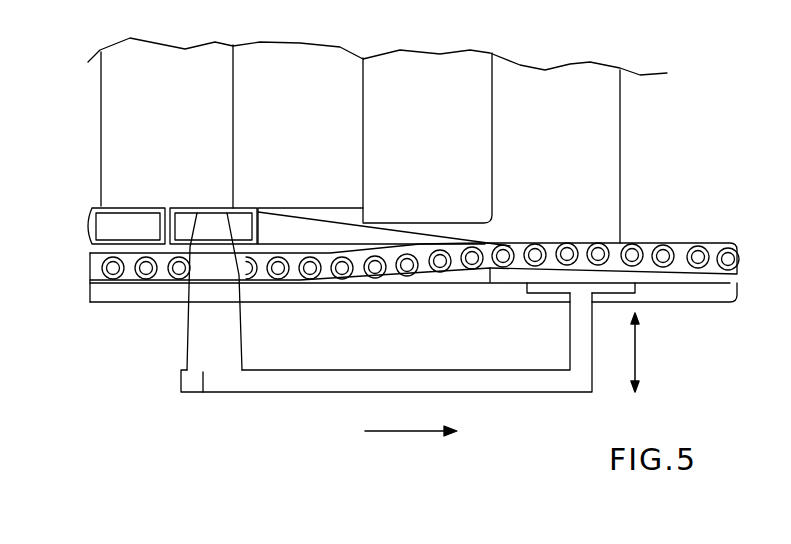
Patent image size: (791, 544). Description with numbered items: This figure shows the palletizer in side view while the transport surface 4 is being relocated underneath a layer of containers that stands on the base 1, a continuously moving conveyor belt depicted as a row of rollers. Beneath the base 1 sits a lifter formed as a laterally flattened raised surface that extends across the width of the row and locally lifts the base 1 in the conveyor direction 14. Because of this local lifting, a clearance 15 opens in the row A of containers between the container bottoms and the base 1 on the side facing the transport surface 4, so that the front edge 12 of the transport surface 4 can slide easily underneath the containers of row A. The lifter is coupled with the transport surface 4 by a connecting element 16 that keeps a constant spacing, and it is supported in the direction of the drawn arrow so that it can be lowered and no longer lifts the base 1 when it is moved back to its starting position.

The base 1 is at (688, 243).
The transport surface 4 is at (102, 222).
The front edge 12 is at (317, 230).
The conveyor direction 14 is at (400, 432).
The clearance 15 is at (527, 237).
The connecting element 16 is at (534, 384).
The row A is at (576, 86).